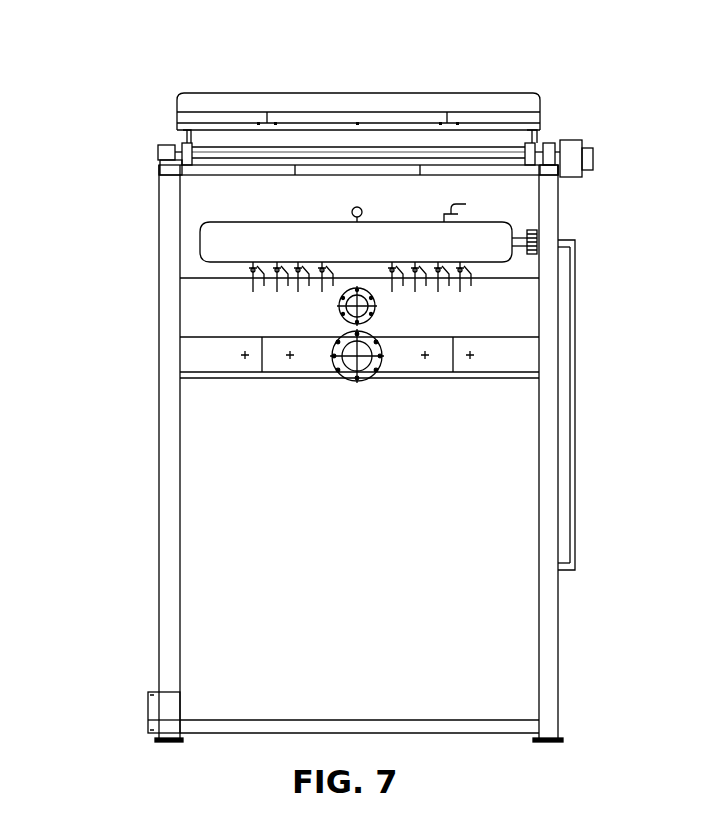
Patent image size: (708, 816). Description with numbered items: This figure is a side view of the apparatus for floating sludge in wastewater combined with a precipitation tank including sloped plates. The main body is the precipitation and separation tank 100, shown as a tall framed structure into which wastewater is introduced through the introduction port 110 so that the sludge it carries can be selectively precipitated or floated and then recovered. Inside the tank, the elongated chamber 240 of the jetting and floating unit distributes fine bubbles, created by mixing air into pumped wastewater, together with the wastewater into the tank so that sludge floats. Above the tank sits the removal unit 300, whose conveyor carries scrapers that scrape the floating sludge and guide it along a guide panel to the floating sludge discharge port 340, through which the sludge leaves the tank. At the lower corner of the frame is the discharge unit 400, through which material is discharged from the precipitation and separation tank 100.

The precipitation and separation tank 100 is at (507, 487).
The introduction port 110 is at (375, 367).
The chamber 240 is at (497, 223).
The removal unit 300 is at (506, 80).
The floating sludge discharge port 340 is at (375, 298).
The discharge unit 400 is at (147, 686).